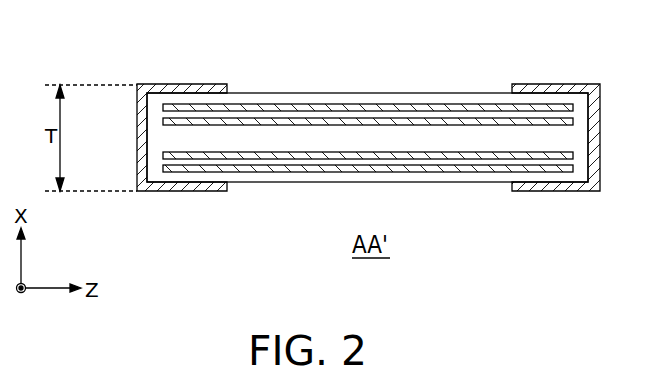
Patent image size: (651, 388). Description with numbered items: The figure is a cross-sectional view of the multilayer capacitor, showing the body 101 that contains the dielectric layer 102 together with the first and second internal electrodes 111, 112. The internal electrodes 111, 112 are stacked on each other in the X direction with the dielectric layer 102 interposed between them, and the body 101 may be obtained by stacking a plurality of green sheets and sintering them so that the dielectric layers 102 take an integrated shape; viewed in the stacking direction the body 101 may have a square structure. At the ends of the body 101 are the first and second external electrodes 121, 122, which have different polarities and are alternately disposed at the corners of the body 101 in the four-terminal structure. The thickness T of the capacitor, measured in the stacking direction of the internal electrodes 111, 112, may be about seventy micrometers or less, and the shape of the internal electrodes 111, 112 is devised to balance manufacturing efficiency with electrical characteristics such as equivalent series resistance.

The body 101 is at (275, 93).
The dielectric layer 102 is at (453, 116).
The first internal electrode 111 is at (163, 107).
The second internal electrode 112 is at (163, 121).
The first external electrode 121 is at (178, 91).
The second external electrode 122 is at (556, 90).